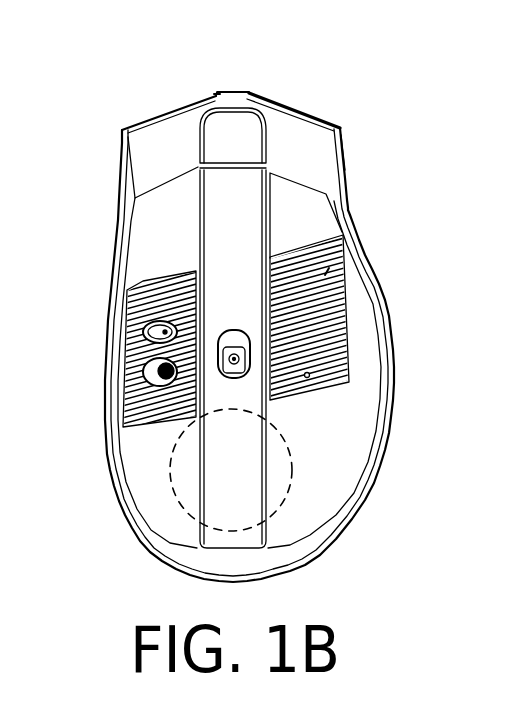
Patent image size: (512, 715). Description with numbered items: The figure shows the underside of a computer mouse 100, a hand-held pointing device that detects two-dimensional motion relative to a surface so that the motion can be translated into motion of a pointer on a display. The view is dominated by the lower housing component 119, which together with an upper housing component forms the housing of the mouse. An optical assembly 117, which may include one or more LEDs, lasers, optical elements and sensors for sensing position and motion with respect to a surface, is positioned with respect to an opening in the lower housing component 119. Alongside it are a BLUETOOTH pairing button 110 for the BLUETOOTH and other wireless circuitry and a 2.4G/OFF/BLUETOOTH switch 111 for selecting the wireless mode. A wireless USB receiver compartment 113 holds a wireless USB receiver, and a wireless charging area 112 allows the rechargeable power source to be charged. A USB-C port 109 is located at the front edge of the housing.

The computer mouse 100 is at (257, 318).
The USB-C port 109 is at (231, 96).
The BLUETOOTH pairing button 110 is at (148, 332).
The 2.4G/OFF/BLUETOOTH switch 111 is at (146, 372).
The wireless charging area 112 is at (292, 471).
The wireless USB receiver compartment 113 is at (323, 353).
The optical assembly 117 is at (220, 337).
The lower housing component 119 is at (347, 148).